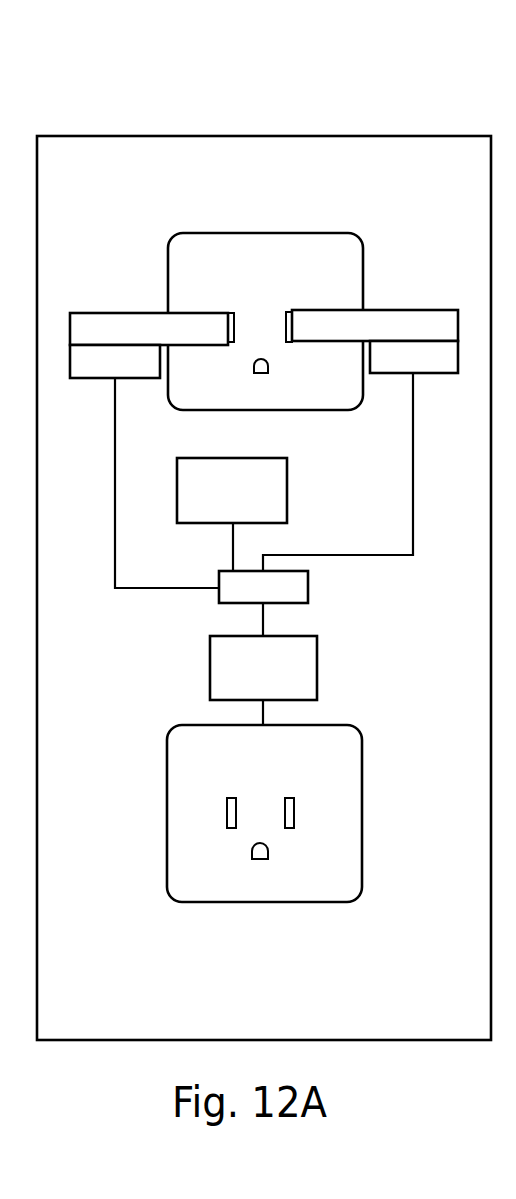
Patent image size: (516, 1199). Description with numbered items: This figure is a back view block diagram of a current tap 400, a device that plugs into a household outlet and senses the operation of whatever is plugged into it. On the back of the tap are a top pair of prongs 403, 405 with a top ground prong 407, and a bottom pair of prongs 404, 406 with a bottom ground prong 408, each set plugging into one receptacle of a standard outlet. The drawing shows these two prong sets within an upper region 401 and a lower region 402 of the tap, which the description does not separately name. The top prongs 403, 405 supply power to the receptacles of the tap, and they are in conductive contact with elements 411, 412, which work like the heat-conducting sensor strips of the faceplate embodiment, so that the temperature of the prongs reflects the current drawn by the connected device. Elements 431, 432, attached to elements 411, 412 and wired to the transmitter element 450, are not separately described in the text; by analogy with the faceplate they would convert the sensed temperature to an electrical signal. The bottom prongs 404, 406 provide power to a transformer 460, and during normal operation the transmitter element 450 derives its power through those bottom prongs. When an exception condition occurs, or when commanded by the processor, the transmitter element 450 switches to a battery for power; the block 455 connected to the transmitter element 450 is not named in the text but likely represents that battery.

The current tap 400 is at (267, 95).
The plug face 401 is at (265, 309).
The receptacle face 402 is at (264, 836).
The top prong 403 is at (232, 316).
The bottom prong 404 is at (232, 798).
The top prong 405 is at (287, 315).
The bottom prong 406 is at (295, 798).
The top ground prong 407 is at (261, 379).
The bottom ground prong 408 is at (260, 865).
The element 411 is at (149, 329).
The element 412 is at (375, 325).
The sensor 431 is at (115, 361).
The sensor 432 is at (414, 357).
The transmitter element 450 is at (263, 587).
The memory 455 is at (232, 490).
The transformer 460 is at (263, 668).